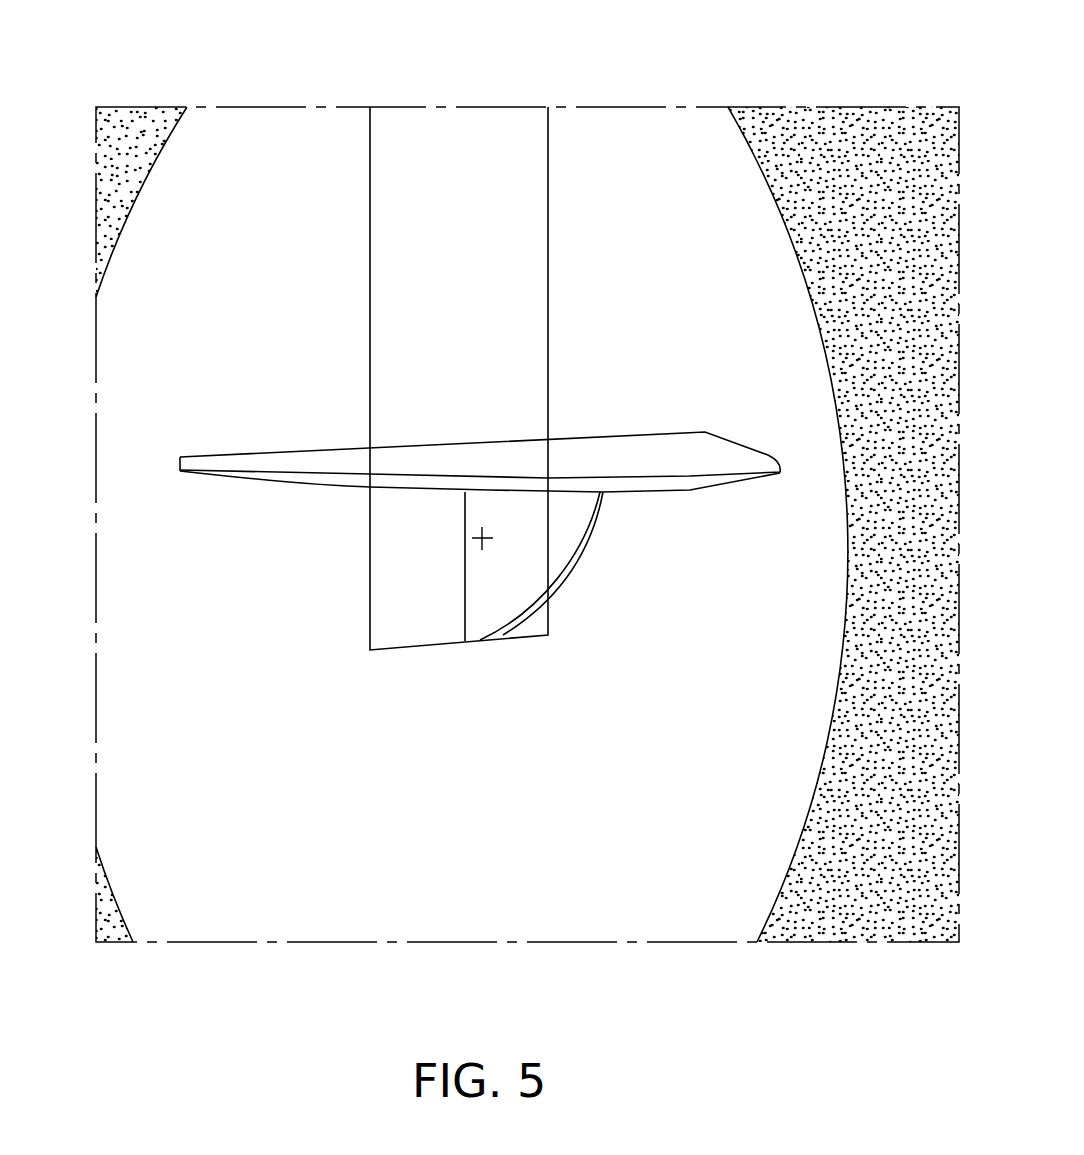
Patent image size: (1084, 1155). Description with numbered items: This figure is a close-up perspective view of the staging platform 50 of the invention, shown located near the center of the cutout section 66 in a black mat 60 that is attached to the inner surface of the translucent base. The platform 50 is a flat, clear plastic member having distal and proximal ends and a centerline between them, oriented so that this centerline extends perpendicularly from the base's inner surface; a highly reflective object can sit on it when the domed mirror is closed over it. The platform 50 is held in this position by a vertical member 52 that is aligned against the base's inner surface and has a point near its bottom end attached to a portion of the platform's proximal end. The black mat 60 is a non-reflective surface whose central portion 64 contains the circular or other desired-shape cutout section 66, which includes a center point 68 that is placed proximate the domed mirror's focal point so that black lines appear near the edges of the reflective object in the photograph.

The platform 50 is at (307, 462).
The vertical member 52 is at (382, 190).
The black mat 60 is at (843, 153).
The central portion 64 is at (782, 913).
The cutout section 66 is at (177, 775).
The center point 68 is at (478, 538).